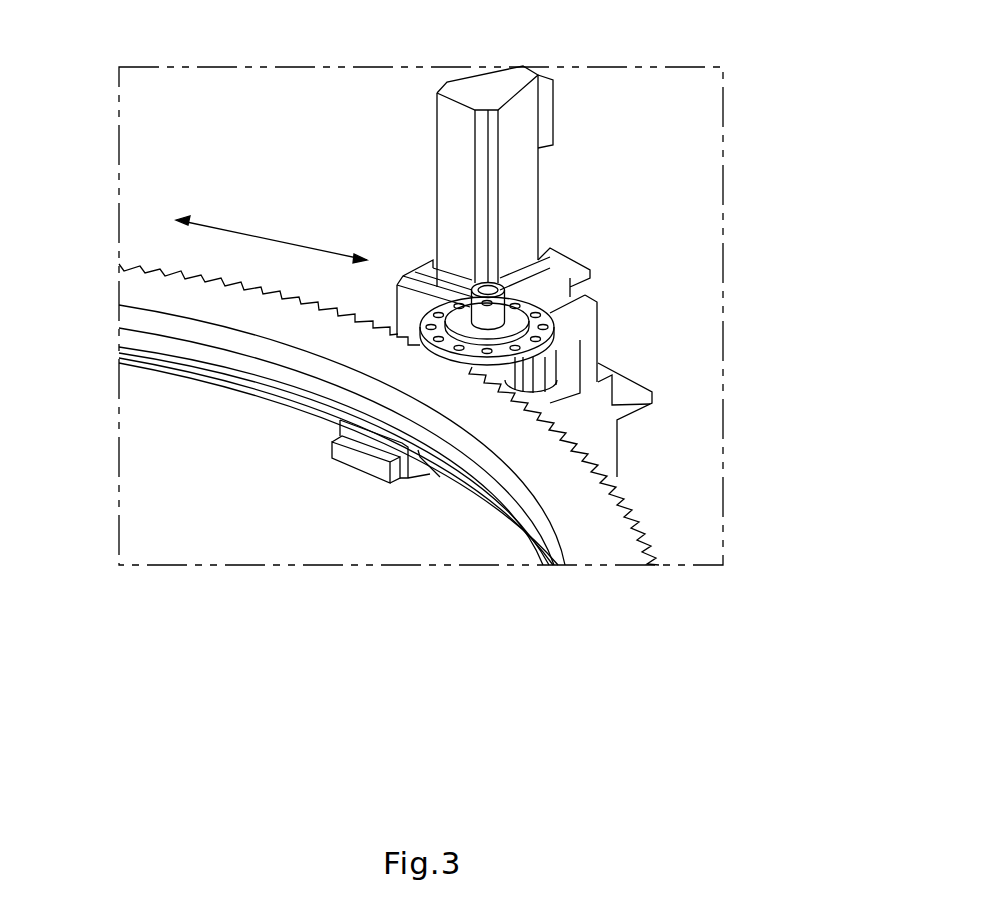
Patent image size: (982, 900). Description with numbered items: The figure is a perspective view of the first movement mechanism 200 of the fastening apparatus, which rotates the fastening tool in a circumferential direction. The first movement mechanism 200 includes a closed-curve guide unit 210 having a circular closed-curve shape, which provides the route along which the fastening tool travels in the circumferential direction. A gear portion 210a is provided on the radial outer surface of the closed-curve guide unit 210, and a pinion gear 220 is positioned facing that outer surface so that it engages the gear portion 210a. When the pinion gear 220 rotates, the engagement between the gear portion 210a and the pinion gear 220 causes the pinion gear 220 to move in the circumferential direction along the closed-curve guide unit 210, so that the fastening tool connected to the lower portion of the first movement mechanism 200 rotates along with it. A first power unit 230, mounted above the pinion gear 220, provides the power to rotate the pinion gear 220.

The first movement mechanism 200 is at (174, 29).
The closed-curve guide unit 210 is at (110, 313).
The gear portion 210a is at (633, 502).
The pinion gear 220 is at (540, 345).
The first power unit 230 is at (521, 195).